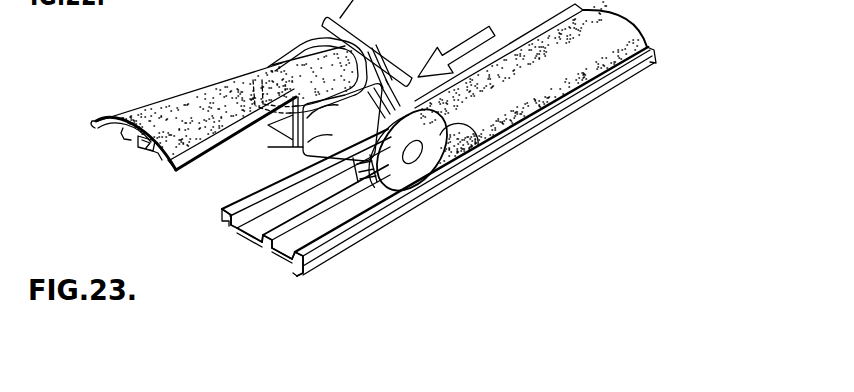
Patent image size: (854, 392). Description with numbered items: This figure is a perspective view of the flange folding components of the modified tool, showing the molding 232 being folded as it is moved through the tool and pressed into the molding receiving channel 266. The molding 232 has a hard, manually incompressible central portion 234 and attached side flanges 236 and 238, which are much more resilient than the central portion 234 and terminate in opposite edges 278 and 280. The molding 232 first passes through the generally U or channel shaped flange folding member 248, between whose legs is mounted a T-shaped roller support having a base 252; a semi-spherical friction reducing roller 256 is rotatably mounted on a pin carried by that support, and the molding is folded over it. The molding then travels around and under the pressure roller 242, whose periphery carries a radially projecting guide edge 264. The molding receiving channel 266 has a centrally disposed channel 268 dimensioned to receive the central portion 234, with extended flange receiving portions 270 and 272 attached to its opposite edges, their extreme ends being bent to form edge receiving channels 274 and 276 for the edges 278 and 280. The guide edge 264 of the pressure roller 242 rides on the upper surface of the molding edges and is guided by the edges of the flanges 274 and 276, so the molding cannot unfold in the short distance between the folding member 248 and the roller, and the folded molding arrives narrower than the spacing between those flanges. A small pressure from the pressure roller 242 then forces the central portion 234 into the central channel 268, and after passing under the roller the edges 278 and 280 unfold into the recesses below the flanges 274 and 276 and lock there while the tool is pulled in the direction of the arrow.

The molding 232 is at (180, 93).
The semi-spherical friction reducing roller 256 is at (273, 70).
The edge of the molding 278 is at (92, 122).
The side flange 236 is at (112, 132).
The central portion 234 is at (136, 143).
The side flange 238 is at (148, 152).
The edge of the molding 280 is at (171, 163).
The base of roller support 252 is at (277, 137).
The flange folding member 248 is at (306, 154).
The edge receiving channel 276 is at (222, 217).
The flange receiving portion 272 is at (244, 232).
The centrally disposed channel 268 is at (253, 250).
The flange receiving portion 270 is at (283, 262).
The edge receiving channel 274 is at (303, 265).
The molding receiving channel 266 is at (365, 233).
The pressure roller 242 is at (405, 173).
The guide edge 264 is at (476, 148).